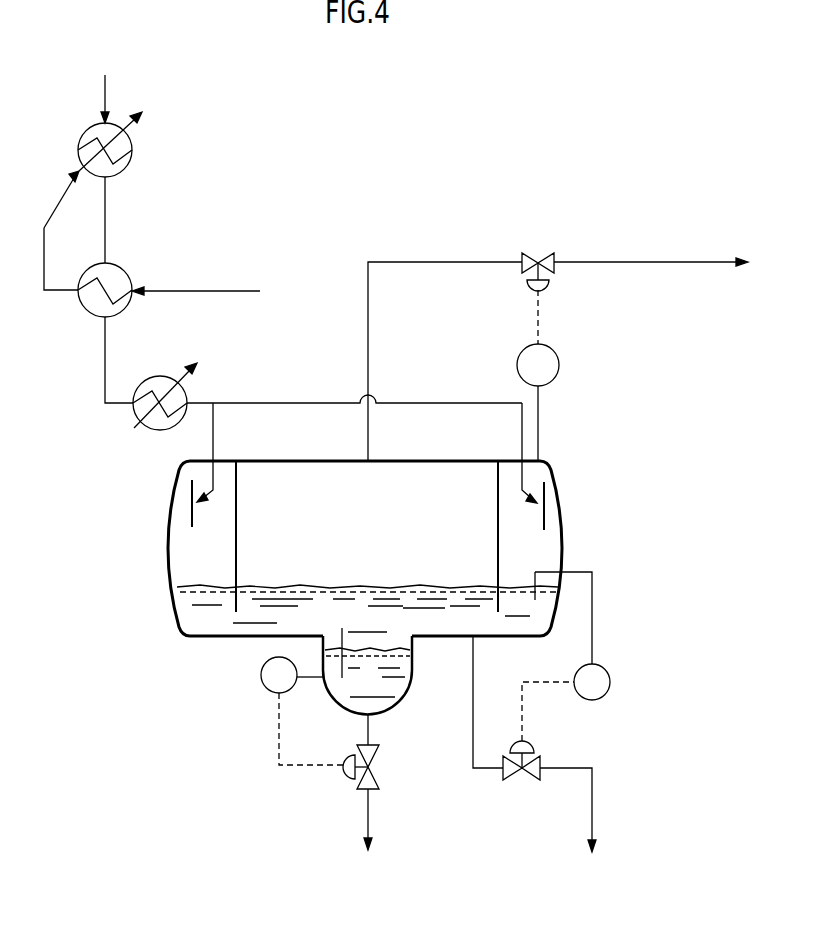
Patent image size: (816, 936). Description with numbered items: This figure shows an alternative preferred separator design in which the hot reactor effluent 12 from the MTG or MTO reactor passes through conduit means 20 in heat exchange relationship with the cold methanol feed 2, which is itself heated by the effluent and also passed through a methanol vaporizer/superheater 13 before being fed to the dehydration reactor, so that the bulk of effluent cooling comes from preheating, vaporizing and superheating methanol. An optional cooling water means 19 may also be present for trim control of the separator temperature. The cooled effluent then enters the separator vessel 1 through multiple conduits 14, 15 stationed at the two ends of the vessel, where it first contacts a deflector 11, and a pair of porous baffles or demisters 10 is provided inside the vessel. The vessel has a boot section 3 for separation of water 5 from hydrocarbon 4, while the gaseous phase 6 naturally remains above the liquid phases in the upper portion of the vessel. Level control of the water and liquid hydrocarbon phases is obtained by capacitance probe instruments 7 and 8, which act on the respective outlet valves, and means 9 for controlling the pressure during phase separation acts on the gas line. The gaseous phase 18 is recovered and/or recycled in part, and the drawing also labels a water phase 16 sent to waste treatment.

The separator vessel 1 is at (172, 563).
The cold methanol feed 2 is at (170, 285).
The boot section 3 is at (395, 707).
The hydrocarbon 4 is at (421, 570).
The water 5 is at (433, 685).
The gaseous phase 6 is at (371, 507).
The capacitance probe instrument 7 is at (262, 689).
The capacitance probe instrument 8 is at (601, 697).
The means for controlling the pressure 9 is at (559, 369).
The porous baffles or demisters 10 is at (237, 565).
The deflector 11 is at (190, 508).
The hot reactor effluent 12 is at (109, 74).
The methanol vaporizer/superheater 13 is at (145, 177).
The conduit 14 is at (214, 448).
The conduit 15 is at (521, 443).
The water phase line to waste treatment 16 is at (372, 810).
The gaseous phase 18 is at (558, 574).
The cooling water means 19 is at (140, 444).
The conduit means 20 is at (268, 405).